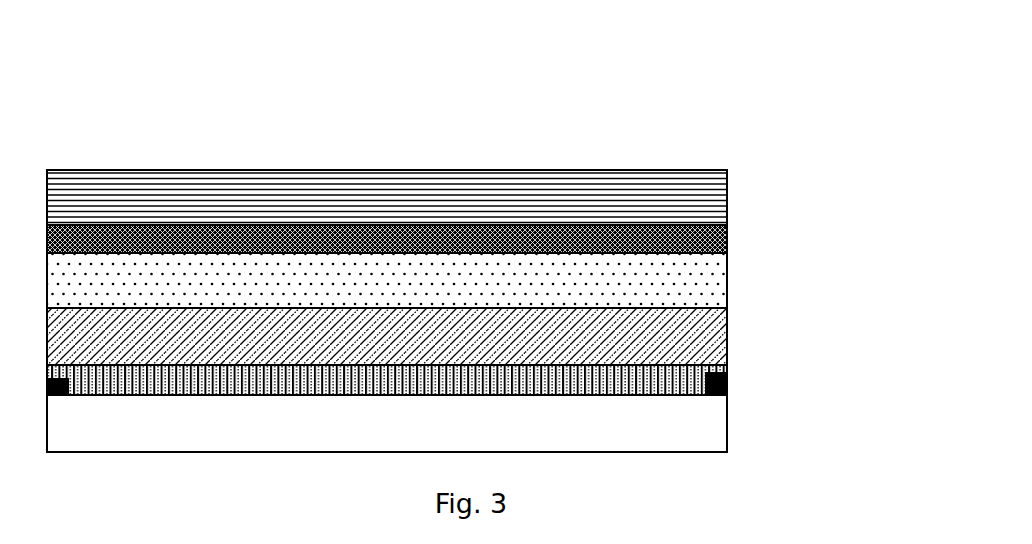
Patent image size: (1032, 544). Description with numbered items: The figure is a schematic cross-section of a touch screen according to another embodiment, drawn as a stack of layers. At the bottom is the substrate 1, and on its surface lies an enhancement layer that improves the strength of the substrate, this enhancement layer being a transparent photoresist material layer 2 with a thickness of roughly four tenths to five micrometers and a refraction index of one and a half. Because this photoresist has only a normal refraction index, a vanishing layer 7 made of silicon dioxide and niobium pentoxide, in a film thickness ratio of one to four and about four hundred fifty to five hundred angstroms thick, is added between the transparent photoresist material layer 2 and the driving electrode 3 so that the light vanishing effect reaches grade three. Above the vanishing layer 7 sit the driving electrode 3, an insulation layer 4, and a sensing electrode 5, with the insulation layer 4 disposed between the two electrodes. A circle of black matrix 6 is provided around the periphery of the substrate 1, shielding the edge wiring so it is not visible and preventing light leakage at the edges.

The substrate 1 is at (625, 423).
The transparent photoresist material layer 2 is at (498, 383).
The driving electrode 3 is at (387, 282).
The insulation layer 4 is at (343, 230).
The sensing electrode 5 is at (228, 195).
The black matrix 6 is at (67, 365).
The vanishing layer 7 is at (660, 335).